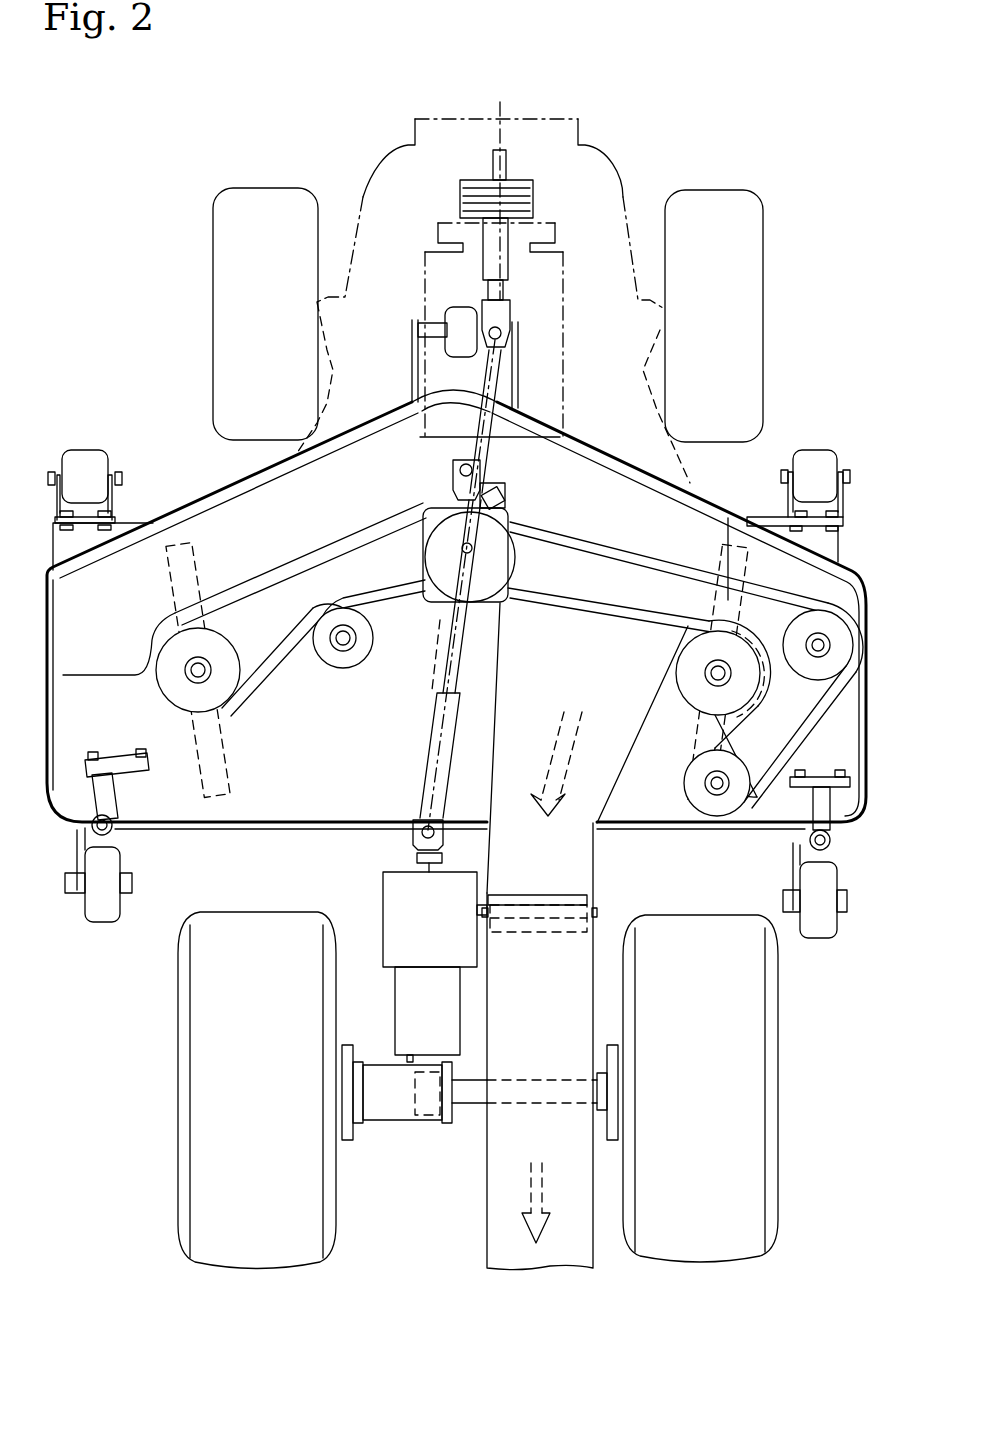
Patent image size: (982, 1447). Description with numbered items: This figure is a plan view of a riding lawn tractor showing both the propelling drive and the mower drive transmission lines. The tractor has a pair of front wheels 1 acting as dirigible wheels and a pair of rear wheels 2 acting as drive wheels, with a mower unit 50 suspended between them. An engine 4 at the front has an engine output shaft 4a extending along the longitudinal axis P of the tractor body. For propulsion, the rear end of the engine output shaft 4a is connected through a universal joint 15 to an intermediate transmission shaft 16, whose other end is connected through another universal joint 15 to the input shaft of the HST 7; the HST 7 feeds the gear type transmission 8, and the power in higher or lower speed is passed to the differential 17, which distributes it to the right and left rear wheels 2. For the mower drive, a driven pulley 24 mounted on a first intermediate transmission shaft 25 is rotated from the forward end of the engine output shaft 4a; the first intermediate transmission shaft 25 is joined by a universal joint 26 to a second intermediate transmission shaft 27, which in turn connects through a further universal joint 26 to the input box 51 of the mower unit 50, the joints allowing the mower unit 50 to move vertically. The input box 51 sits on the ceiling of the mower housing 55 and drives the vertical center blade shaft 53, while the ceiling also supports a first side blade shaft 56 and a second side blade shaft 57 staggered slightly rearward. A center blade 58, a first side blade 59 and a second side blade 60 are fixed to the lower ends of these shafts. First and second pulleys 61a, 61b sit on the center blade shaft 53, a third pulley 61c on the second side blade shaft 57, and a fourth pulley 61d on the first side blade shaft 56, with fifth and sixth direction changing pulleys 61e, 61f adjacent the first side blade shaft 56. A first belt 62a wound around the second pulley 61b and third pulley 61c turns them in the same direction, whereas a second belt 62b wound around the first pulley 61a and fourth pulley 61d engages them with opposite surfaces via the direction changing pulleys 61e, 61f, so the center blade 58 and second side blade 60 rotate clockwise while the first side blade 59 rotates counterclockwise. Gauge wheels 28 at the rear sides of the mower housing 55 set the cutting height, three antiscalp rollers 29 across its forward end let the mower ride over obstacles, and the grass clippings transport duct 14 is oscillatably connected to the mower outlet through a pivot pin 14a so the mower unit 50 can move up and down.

The longitudinal axis P is at (498, 186).
The front wheels 1 is at (230, 262).
The rear wheels 2 is at (210, 1172).
The engine 4 is at (563, 275).
The engine output shaft 4a is at (517, 482).
The HST 7 is at (380, 900).
The gear type transmission 8 is at (395, 1008).
The grass clippings transport duct 14 is at (493, 1242).
The pivot pin 14a is at (597, 913).
The universal joint 15 is at (507, 490).
The intermediate transmission shaft 16 is at (447, 735).
The differential 17 is at (420, 1117).
The driven pulley 24 is at (522, 180).
The first intermediate transmission shaft 25 is at (493, 158).
The universal joint 26 is at (517, 313).
The second intermediate transmission shaft 27 is at (420, 423).
The gauge wheels 28 is at (107, 913).
The antiscalp rollers 29 is at (463, 307).
The mower unit 50 is at (207, 492).
The input box 51 is at (510, 565).
The center blade shaft 53 is at (420, 535).
The mower housing 55 is at (307, 802).
The first side blade shaft 56 is at (717, 677).
The second side blade shaft 57 is at (200, 677).
The center blade 58 is at (437, 640).
The first side blade 59 is at (693, 590).
The second side blade 60 is at (237, 780).
The first pulley 61a is at (534, 748).
The second pulley 61b is at (543, 670).
The third pulley 61c is at (167, 690).
The fourth pulley 61d is at (683, 670).
The fifth direction changing pulley 61e is at (827, 617).
The sixth direction changing pulley 61f is at (700, 800).
The first belt 62a is at (342, 661).
The second belt 62b is at (603, 550).